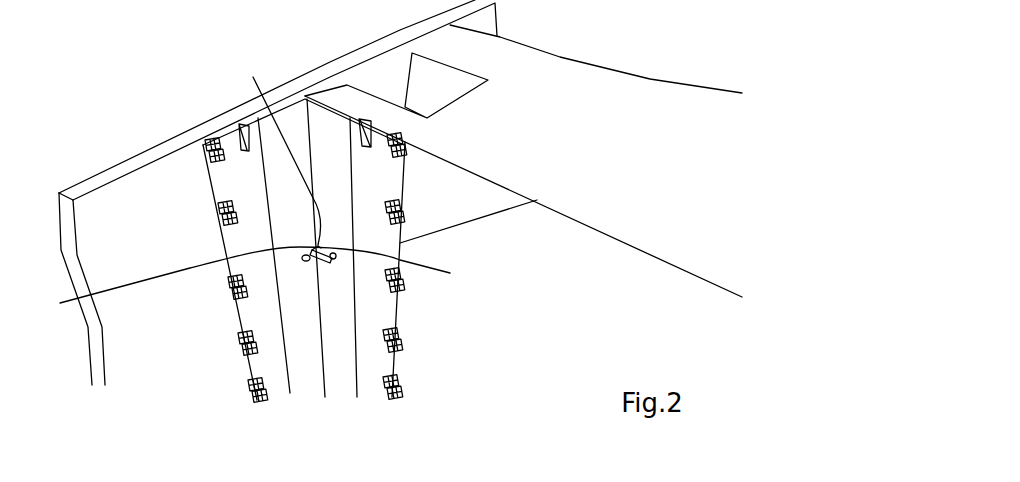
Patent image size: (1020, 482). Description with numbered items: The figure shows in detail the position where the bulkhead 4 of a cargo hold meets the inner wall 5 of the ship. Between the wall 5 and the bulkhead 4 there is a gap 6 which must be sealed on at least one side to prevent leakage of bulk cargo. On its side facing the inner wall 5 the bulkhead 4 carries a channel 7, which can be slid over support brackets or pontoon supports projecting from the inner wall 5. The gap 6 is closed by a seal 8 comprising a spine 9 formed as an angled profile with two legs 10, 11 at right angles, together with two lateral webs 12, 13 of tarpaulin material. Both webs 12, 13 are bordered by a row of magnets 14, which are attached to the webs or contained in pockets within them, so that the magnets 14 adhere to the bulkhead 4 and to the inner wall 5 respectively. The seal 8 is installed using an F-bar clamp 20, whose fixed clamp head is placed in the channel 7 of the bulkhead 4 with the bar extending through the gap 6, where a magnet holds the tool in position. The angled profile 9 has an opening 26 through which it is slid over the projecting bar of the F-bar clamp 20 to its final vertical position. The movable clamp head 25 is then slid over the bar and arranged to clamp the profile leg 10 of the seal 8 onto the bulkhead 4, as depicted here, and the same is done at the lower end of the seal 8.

The bulkhead 4 is at (660, 95).
The inner wall 5 is at (122, 352).
The gap 6 is at (548, 44).
The channel 7 is at (383, 91).
The seal 8 is at (402, 316).
The spine 9 is at (317, 377).
The leg 10 is at (347, 380).
The leg 11 is at (307, 352).
The lateral web 12 is at (267, 363).
The lateral web 13 is at (377, 360).
The magnets 14 is at (237, 292).
The F-bar clamp 20 is at (239, 283).
The movable clamp head 25 is at (390, 267).
The opening 26 is at (276, 149).